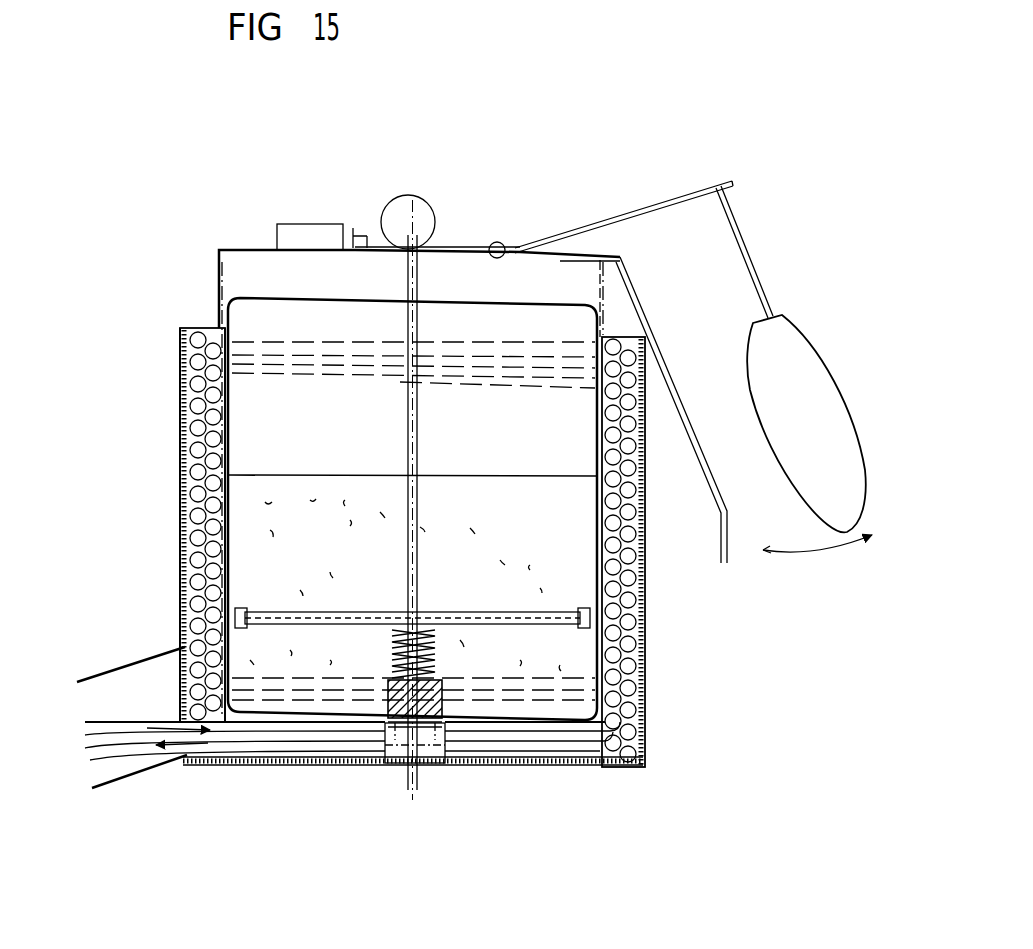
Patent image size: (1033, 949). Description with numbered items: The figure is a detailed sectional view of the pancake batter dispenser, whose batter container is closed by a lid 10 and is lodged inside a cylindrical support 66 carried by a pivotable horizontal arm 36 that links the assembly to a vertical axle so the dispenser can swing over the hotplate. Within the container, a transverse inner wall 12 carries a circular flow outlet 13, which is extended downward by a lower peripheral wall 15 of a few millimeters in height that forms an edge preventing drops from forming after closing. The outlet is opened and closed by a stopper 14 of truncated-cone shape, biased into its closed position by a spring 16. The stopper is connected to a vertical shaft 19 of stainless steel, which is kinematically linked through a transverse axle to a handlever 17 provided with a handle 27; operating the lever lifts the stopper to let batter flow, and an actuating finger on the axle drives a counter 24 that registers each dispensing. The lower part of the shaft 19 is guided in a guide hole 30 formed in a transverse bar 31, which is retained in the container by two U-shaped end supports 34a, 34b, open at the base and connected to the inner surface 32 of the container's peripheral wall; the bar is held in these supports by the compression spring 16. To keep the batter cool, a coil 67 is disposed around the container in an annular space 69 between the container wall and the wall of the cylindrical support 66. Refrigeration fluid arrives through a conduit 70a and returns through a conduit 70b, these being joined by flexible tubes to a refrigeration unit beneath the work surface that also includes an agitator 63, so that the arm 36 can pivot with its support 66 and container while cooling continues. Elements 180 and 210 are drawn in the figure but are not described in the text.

The lid 10 is at (240, 250).
The transverse inner wall 12 is at (262, 713).
The flow outlet 13 is at (423, 730).
The stopper 14 is at (433, 693).
The lower peripheral wall 15 is at (392, 727).
The spring 16 is at (443, 648).
The handlever 17 is at (818, 318).
The vertical shaft 19 is at (413, 510).
The counter 24 is at (295, 233).
The handle 27 is at (812, 482).
The guide hole 30 is at (420, 603).
The transverse bar 31 is at (498, 612).
The inner surface 32 is at (234, 408).
The end support 34a is at (241, 603).
The end support 34b is at (588, 606).
The horizontal arm 36 is at (126, 657).
The agitator 63 is at (178, 357).
The cylindrical support 66 is at (163, 431).
The coil 67 is at (178, 460).
The annular space 69 is at (197, 327).
The conduit for the arrival of refrigerated fluid 70a is at (117, 725).
The conduit for the return of the refrigeration fluid 70b is at (222, 743).
The arm 180 is at (655, 207).
The ball joint 210 is at (427, 196).